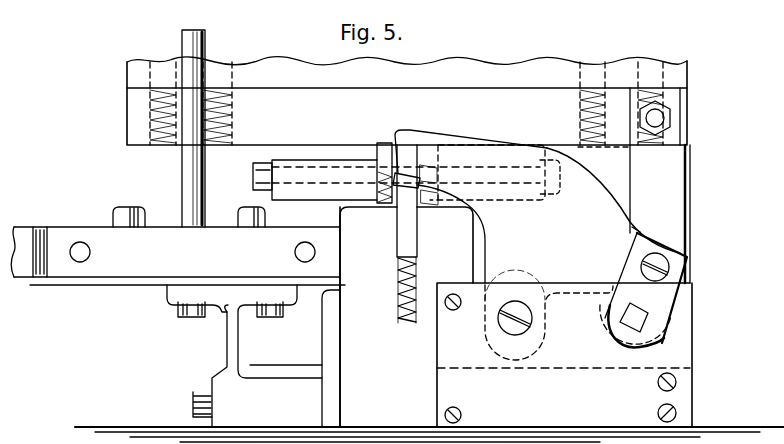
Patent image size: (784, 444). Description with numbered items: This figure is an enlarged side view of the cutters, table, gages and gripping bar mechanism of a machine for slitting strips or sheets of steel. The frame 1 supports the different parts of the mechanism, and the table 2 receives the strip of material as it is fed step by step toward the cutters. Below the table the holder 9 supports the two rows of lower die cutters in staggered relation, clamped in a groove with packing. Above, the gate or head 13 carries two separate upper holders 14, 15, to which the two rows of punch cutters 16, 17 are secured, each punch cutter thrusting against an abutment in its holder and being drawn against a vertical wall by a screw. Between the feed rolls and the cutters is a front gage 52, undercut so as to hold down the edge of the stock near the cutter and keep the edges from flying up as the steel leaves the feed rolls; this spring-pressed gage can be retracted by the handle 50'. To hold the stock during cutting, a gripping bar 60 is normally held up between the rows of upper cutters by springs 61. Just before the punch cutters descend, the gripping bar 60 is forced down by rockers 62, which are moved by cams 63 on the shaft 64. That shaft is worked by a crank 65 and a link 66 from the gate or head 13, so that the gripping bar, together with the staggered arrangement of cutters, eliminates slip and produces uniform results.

The frame 1 is at (365, 437).
The table 2 is at (73, 280).
The holder 9 is at (328, 333).
The gate or head 13 is at (677, 78).
The upper holder 14 is at (572, 104).
The upper holder 15 is at (395, 153).
The punch cutters 16 is at (437, 150).
The punch cutters 17 is at (368, 145).
The handle 50' is at (154, 124).
The gage 52 is at (35, 227).
The gripping bar 60 is at (407, 225).
The spring 61 is at (393, 277).
The rocker 62 is at (578, 195).
The cam 63 is at (668, 322).
The shaft 64 is at (637, 318).
The crank 65 is at (673, 265).
The link 66 is at (665, 203).